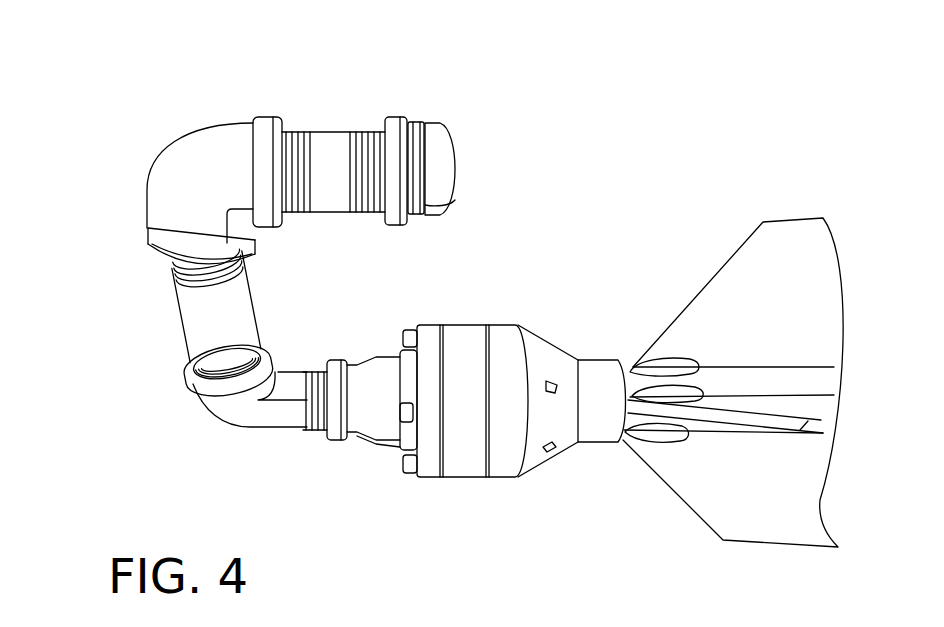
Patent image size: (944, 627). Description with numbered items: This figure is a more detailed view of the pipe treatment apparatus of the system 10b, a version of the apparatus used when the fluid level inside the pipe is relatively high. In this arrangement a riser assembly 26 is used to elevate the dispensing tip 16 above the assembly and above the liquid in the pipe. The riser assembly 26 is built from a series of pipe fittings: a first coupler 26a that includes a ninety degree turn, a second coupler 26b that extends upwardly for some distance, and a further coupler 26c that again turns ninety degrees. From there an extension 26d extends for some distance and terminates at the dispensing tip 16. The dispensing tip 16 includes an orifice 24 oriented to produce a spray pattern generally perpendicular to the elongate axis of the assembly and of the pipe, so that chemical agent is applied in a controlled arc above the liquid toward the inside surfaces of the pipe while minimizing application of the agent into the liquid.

The system 10b is at (115, 142).
The dispensing tip 16 is at (458, 157).
The orifice 24 is at (445, 110).
The riser assembly 26 is at (278, 306).
The first coupler 26a is at (208, 408).
The second coupler 26b is at (183, 312).
The coupler 26c is at (148, 192).
The extension 26d is at (328, 138).